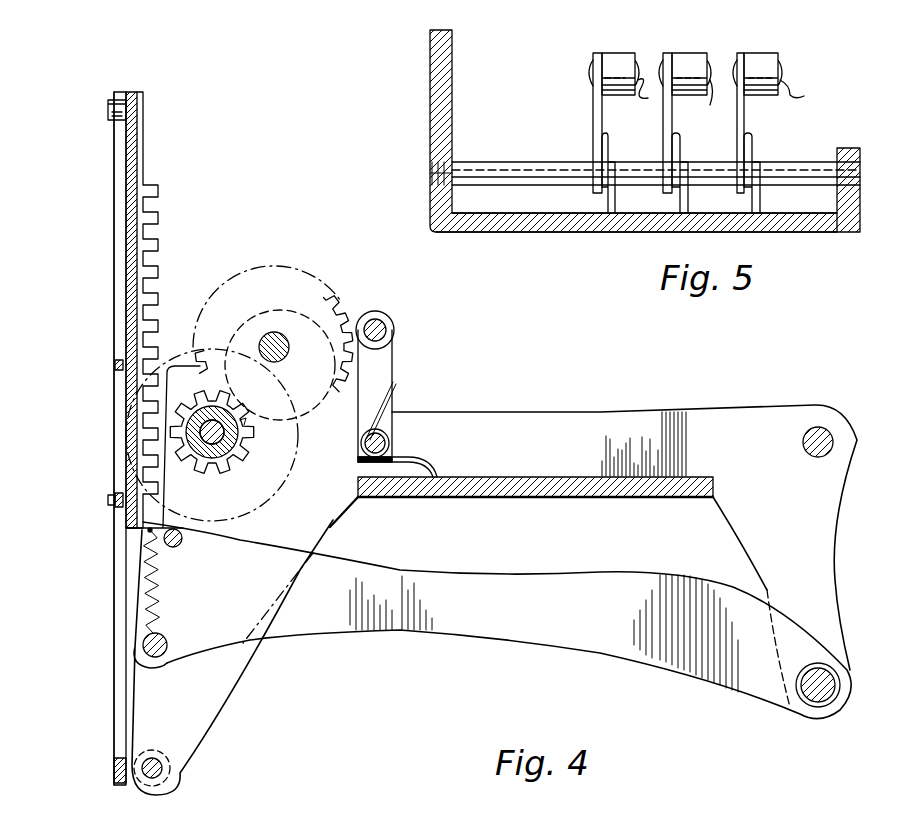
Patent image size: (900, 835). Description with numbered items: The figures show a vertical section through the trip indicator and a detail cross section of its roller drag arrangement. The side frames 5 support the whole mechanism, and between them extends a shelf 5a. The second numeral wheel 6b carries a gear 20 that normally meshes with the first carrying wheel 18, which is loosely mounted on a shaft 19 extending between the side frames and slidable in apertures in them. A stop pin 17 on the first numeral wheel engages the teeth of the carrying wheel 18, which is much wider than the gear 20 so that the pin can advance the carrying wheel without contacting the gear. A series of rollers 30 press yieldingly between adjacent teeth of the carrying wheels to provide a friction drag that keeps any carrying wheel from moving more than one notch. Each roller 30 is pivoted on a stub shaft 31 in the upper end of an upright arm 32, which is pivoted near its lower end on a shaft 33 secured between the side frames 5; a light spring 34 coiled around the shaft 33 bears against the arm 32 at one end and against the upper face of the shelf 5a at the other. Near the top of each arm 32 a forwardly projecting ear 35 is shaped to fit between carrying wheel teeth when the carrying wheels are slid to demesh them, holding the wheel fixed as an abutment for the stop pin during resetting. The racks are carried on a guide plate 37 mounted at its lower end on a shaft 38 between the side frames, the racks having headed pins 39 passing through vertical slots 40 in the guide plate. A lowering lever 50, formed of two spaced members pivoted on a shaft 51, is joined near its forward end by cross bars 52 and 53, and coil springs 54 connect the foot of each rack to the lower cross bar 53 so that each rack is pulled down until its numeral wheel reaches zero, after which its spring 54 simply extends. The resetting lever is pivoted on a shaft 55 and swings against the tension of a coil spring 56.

In FIG. 5, the side frames 5 is at (452, 125).
In FIG. 4, the side frames 5 is at (705, 418).
In FIG. 5, the shelf 5a is at (805, 232).
In FIG. 4, the shelf 5a is at (600, 497).
In FIG. 4, the second numeral wheel 6b is at (298, 465).
In FIG. 4, the stop pin 17 is at (248, 452).
In FIG. 4, the first carrying wheel 18 is at (302, 295).
In FIG. 4, the shaft 19 is at (282, 338).
In FIG. 4, the gear 20 is at (210, 470).
In FIG. 5, the rollers 30 is at (700, 45).
In FIG. 5, the stub shaft 31 is at (733, 99).
In FIG. 5, the upright arm 32 is at (602, 121).
In FIG. 4, the upright arm 32 is at (380, 380).
In FIG. 5, the shaft 33 is at (800, 172).
In FIG. 4, the shaft 33 is at (389, 440).
In FIG. 5, the light spring 34 is at (682, 160).
In FIG. 4, the light spring 34 is at (410, 455).
In FIG. 4, the ear 35 is at (358, 325).
In FIG. 4, the guide plate 37 is at (114, 618).
In FIG. 4, the shaft 38 is at (170, 775).
In FIG. 4, the headed pins 39 is at (108, 110).
In FIG. 4, the slots 40 is at (126, 213).
In FIG. 4, the lowering lever 50 is at (575, 588).
In FIG. 4, the shaft 51 is at (822, 707).
In FIG. 4, the cross bar 52 is at (180, 545).
In FIG. 4, the lower cross bar 53 is at (167, 642).
In FIG. 4, the coil springs 54 is at (155, 600).
In FIG. 4, the shaft 55 is at (830, 435).
In FIG. 4, the coil spring 56 is at (150, 205).